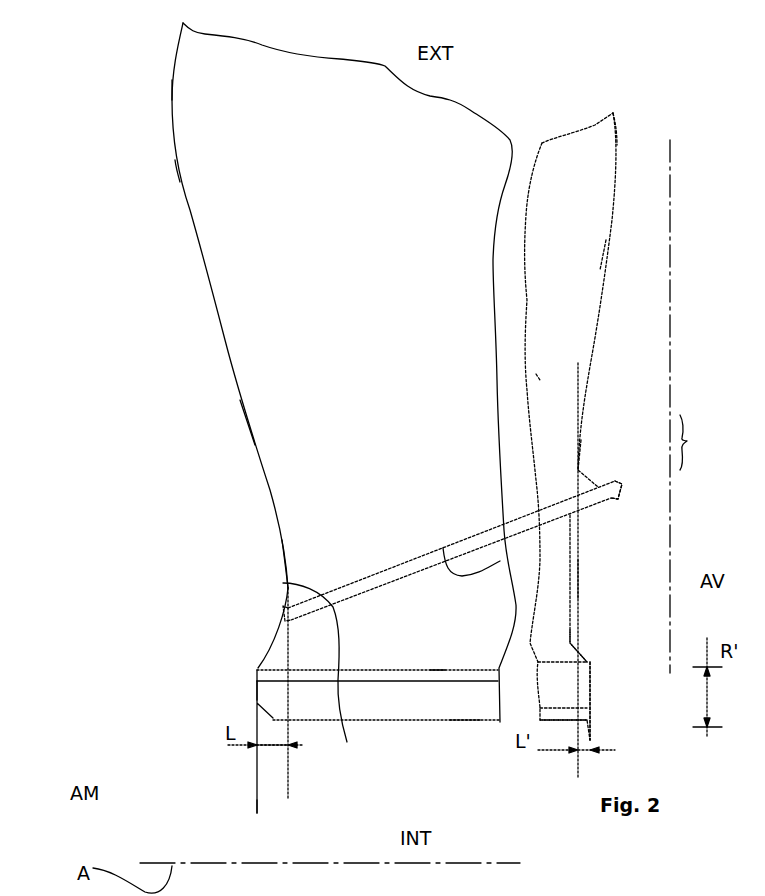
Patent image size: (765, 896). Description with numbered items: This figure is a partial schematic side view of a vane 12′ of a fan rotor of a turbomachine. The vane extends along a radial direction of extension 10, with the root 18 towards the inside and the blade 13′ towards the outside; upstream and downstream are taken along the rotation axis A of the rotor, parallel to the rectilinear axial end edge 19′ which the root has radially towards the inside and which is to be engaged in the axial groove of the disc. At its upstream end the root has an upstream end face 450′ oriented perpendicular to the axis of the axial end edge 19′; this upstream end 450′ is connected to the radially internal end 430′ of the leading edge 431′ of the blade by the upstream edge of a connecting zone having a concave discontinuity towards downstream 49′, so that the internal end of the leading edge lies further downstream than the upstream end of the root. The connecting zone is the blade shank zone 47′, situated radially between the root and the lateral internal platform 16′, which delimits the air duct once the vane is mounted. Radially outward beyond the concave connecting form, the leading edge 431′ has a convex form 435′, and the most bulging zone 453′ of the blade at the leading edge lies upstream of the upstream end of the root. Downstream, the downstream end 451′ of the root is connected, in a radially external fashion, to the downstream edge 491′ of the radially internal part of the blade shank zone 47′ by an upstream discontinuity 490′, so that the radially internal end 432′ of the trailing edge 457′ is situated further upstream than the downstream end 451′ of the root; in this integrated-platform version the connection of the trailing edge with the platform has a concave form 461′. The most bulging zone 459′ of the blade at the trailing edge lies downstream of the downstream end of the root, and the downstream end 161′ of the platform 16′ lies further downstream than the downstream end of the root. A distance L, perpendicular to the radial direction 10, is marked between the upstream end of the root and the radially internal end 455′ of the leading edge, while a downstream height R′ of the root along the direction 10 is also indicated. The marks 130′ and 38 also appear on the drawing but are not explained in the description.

The blade 13′ is at (222, 230).
The most bulging zone of the blade at the leading edge 453′ is at (172, 88).
The leading edge of the blade 431′ is at (177, 170).
The convex form of the leading edge 435′ is at (254, 422).
The blade root region 130′ is at (318, 575).
The radially internal end of the leading edge 430′ is at (283, 583).
The discontinuity towards downstream 49′ is at (258, 668).
The blade shank zone 47′ is at (378, 680).
The upstream end of the root 450′ is at (257, 688).
The radially internal end of the leading edge of the blade 455′ is at (300, 746).
The root 18 is at (435, 670).
The rectilinear axial end edge 19′ is at (465, 722).
The platform upstream wall 38 is at (258, 812).
The lateral internal platform 16′ is at (505, 560).
The downstream end of the platform 161′ is at (620, 482).
The direction of extension of the vane 10 is at (668, 224).
The vane 12′ is at (537, 373).
The most bulging zone of the blade at the trailing edge 459′ is at (622, 137).
The trailing edge of the blade 457′ is at (608, 250).
The radially internal end of the trailing edge 432′ is at (581, 468).
The concave form 461′ is at (708, 442).
The downstream edge of the radially internal part of the blade shank zone 491′ is at (580, 582).
The upstream discontinuity 490′ is at (571, 643).
The downstream end of the root 451′ is at (592, 697).